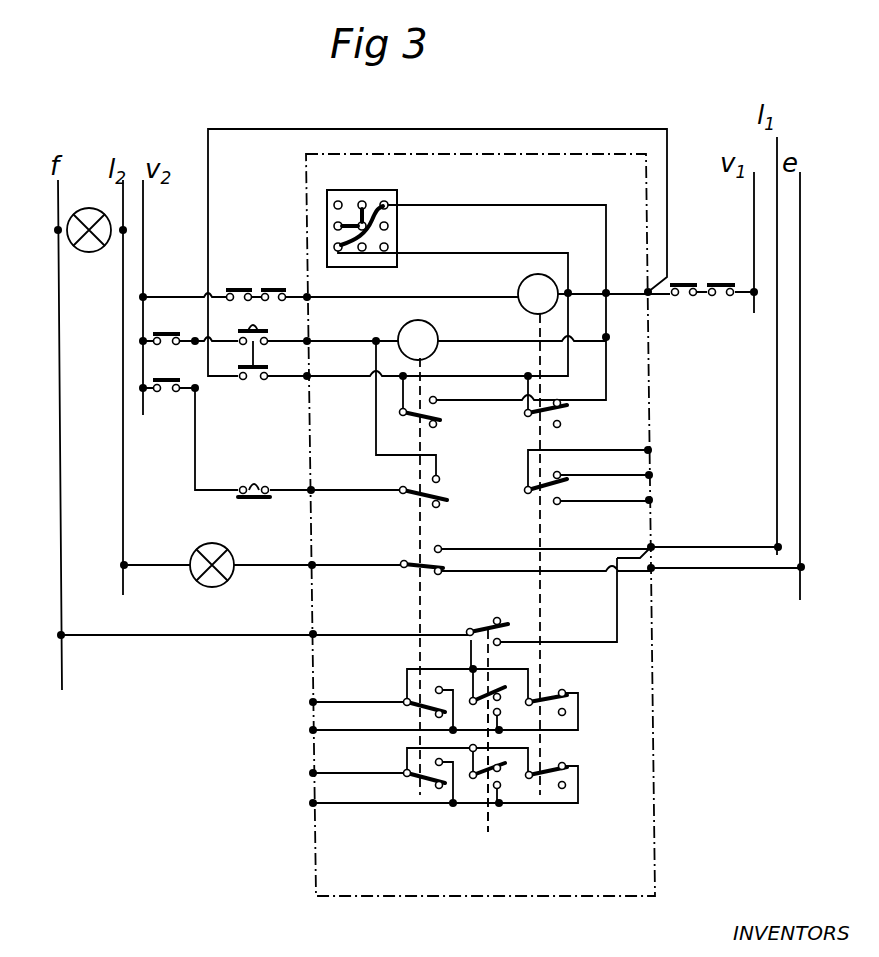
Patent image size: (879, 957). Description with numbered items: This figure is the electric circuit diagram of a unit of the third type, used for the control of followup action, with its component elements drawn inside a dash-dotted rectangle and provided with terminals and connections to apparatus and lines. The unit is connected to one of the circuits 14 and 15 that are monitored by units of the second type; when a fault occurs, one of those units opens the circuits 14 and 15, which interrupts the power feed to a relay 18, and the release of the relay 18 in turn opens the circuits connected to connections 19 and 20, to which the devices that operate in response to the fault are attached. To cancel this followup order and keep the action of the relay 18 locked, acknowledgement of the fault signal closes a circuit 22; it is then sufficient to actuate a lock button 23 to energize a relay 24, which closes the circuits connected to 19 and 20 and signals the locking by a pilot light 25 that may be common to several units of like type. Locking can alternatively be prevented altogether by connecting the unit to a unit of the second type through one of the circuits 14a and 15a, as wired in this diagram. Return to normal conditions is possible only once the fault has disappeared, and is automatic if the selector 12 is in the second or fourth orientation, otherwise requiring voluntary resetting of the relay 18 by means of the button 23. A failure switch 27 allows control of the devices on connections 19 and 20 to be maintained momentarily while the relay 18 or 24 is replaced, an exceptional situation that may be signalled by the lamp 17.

The selector 12 is at (356, 190).
The circuit 14 is at (236, 288).
The circuit 15 is at (273, 288).
The circuit 14a is at (688, 284).
The circuit 15a is at (718, 300).
The lamp 17 is at (97, 253).
The relay 18 is at (520, 288).
The connection 19 is at (313, 730).
The connection 20 is at (313, 803).
The circuit 22 is at (174, 376).
The lock button 23 is at (262, 350).
The relay 24 is at (432, 325).
The pilot light 25 is at (228, 582).
The failure switch 27 is at (488, 830).